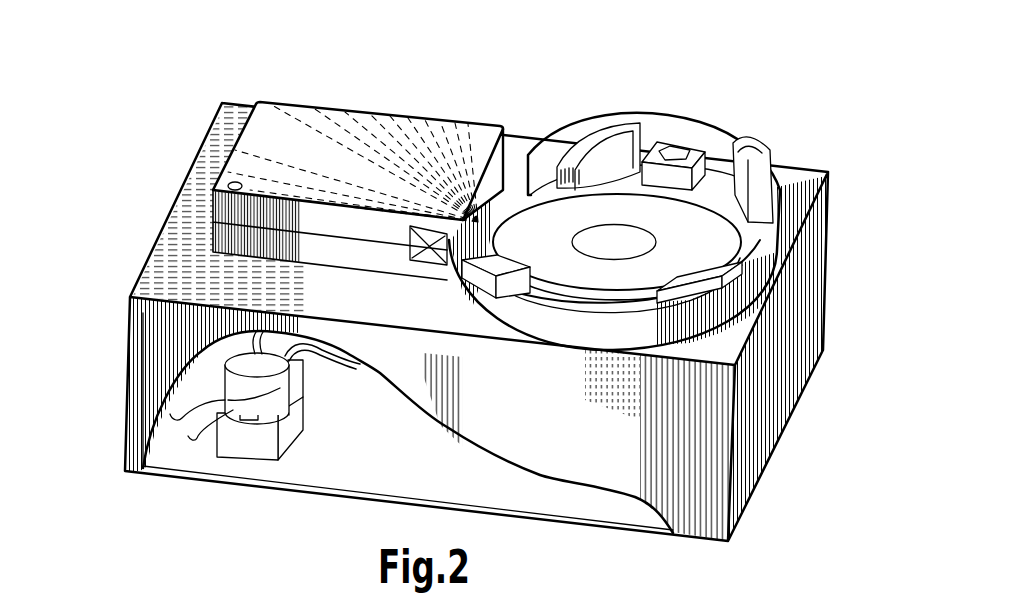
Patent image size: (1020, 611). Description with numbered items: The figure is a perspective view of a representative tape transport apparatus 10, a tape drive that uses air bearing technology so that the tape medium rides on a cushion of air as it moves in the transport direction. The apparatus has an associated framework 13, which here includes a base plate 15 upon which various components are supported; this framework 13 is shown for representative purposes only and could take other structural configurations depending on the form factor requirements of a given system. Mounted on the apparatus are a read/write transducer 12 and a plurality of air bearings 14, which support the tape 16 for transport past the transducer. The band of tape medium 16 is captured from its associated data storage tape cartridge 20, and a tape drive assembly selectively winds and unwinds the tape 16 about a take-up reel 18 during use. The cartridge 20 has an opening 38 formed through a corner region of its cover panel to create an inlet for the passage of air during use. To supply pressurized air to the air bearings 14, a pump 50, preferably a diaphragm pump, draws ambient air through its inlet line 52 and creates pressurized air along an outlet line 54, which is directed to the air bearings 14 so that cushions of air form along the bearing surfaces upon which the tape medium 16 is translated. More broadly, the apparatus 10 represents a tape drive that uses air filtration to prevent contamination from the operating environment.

The tape transport apparatus 10 is at (460, 295).
The read/write transducer 12 is at (675, 147).
The framework 13 is at (127, 352).
The air bearings 14 is at (440, 285).
The base plate 15 is at (180, 260).
The tape 16 is at (613, 327).
The take-up reel 18 is at (590, 275).
The data storage tape cartridge 20 is at (316, 133).
The opening 38 is at (230, 186).
The pump 50 is at (257, 445).
The inlet line 52 is at (228, 354).
The outlet line 54 is at (327, 366).